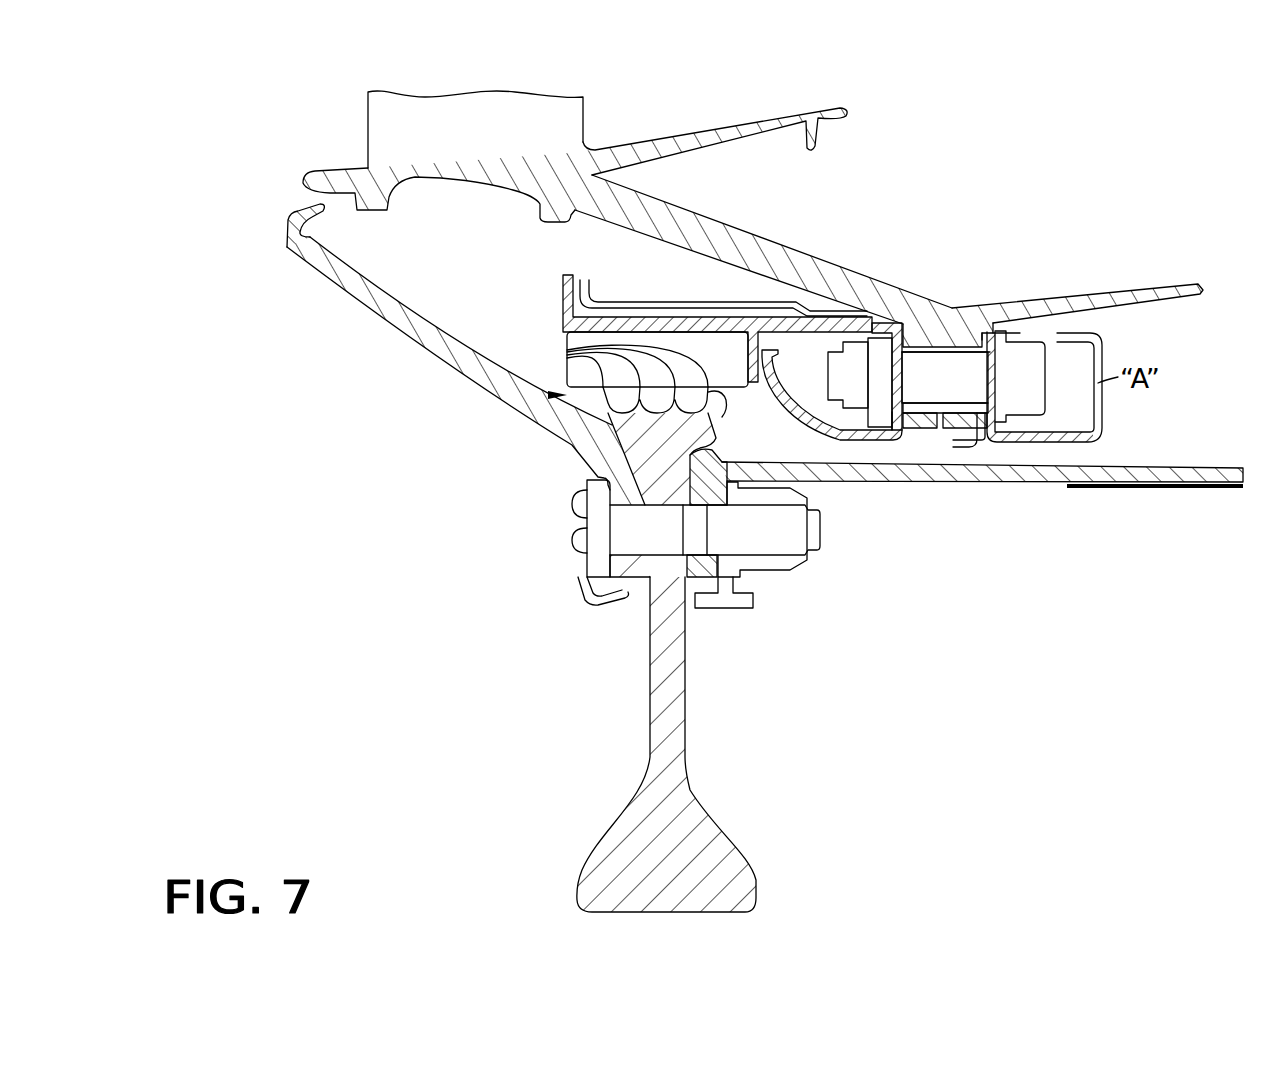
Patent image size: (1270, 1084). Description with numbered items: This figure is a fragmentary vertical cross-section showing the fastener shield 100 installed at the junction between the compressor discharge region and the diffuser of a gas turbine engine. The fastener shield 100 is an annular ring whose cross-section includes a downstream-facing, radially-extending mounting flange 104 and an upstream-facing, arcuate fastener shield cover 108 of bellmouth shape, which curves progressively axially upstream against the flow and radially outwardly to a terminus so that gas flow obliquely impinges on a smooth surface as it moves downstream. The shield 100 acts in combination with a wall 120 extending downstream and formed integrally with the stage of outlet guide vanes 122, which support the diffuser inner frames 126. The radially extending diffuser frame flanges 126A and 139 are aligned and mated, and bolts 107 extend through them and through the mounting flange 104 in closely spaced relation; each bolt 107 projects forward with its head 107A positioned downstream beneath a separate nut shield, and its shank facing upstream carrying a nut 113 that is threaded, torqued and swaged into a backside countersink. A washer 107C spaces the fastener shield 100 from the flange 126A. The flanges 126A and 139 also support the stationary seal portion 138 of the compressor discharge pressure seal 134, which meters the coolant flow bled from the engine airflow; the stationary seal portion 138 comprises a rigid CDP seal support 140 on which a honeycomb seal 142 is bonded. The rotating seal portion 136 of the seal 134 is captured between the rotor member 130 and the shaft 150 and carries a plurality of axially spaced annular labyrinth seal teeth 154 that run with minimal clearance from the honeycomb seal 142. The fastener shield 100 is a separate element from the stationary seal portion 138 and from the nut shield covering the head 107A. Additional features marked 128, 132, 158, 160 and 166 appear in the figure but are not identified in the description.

The fastener shield 100 is at (900, 437).
The mounting flange 104 is at (893, 320).
The bolts 107 is at (997, 425).
The head 107A is at (1030, 397).
The washer 107C is at (888, 413).
The fastener shield cover 108 is at (826, 368).
The nut 113 is at (856, 377).
The wall 120 is at (712, 134).
The outlet guide vanes 122 is at (410, 130).
The diffuser inner frames 126 is at (748, 245).
The diffuser frame flange 126A is at (970, 318).
The clip 128 is at (362, 228).
The rotor member 130 is at (417, 326).
The flow passage 132 is at (548, 395).
The compressor discharge pressure seal 134 is at (722, 446).
The rotating seal portion 136 is at (630, 437).
The stationary seal portion 138 is at (637, 300).
The diffuser frame flange 139 is at (1063, 298).
The CDP seal support 140 is at (565, 322).
The honeycomb seal 142 is at (721, 369).
The shaft 150 is at (1040, 482).
The labyrinth seal teeth 154 is at (567, 352).
The assembly 158 is at (1241, 394).
The bolt head 160 is at (835, 373).
The retainer hook 166 is at (925, 430).